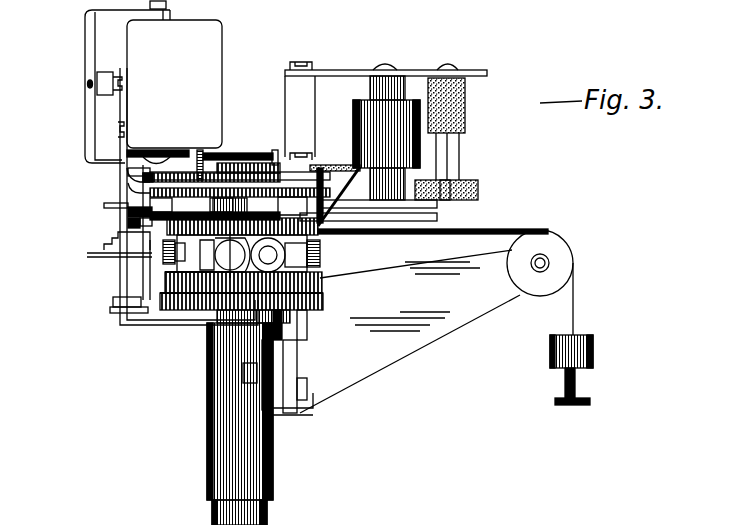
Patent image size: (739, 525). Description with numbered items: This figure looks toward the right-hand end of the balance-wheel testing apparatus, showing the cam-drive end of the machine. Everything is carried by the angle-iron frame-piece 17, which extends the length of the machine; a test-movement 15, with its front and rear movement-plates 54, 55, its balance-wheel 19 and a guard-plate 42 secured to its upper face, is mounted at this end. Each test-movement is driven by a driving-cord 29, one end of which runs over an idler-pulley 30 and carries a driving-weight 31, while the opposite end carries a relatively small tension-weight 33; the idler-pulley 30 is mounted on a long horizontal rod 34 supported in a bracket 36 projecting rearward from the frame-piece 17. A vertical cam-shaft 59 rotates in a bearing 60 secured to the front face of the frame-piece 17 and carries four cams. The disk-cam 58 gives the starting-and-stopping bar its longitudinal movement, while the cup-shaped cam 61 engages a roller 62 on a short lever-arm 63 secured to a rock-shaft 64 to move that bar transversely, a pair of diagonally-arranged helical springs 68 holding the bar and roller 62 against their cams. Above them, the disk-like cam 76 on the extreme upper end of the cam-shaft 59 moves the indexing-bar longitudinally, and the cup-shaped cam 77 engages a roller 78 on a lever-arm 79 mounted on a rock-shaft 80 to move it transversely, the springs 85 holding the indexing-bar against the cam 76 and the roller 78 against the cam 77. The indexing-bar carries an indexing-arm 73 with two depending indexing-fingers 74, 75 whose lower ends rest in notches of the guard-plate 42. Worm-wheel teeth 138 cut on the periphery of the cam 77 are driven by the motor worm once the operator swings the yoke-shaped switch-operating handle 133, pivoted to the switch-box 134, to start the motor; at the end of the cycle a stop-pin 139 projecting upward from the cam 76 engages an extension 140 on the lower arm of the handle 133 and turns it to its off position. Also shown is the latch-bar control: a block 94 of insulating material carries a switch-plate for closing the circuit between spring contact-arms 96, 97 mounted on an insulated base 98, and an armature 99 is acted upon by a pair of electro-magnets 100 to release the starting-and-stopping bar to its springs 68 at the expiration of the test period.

The switch-operating handle 133 is at (85, 57).
The switch-box 134 is at (222, 29).
The extension 140 is at (184, 168).
The indexing-finger 74 is at (138, 182).
The disk-like cam 76 is at (170, 178).
The stop-pin 139 is at (198, 160).
The helical springs 68 is at (235, 155).
The disk-cam 58 is at (292, 206).
The indexing-arm 73 is at (147, 177).
The indexing-finger 75 is at (140, 192).
The movement-plate 54 is at (127, 208).
The guard-plate 42 is at (143, 200).
The balance-wheel 19 is at (120, 220).
The test-movement 15 is at (127, 221).
The rear movement-plate 55 is at (158, 253).
The roller 62 is at (163, 260).
The cup-shaped cam 61 is at (318, 232).
The roller 78 is at (323, 257).
The cup-shaped cam 77 is at (320, 270).
The lever-arm 63 is at (202, 256).
The rock-shaft 64 is at (222, 263).
The rock-shaft 80 is at (268, 255).
The lever-arm 79 is at (323, 288).
The worm-wheel teeth 138 is at (320, 308).
The cam-shaft 59 is at (227, 402).
The bearing 60 is at (205, 455).
The angle-iron frame-piece 17 is at (270, 410).
The electro-magnets 100 is at (418, 105).
The insulated base 98 is at (464, 118).
The spring contact-arm 96 is at (457, 152).
The block of insulating material 94 is at (479, 195).
The spring contact-arm 97 is at (443, 186).
The armature 99 is at (392, 203).
The springs 85 is at (333, 166).
The driving-cord 29 is at (448, 234).
The idler-pulley 30 is at (533, 295).
The horizontal rod 34 is at (545, 261).
The bracket 36 is at (420, 340).
The driving-weight 31 is at (551, 355).
The tension-weight 33 is at (577, 404).